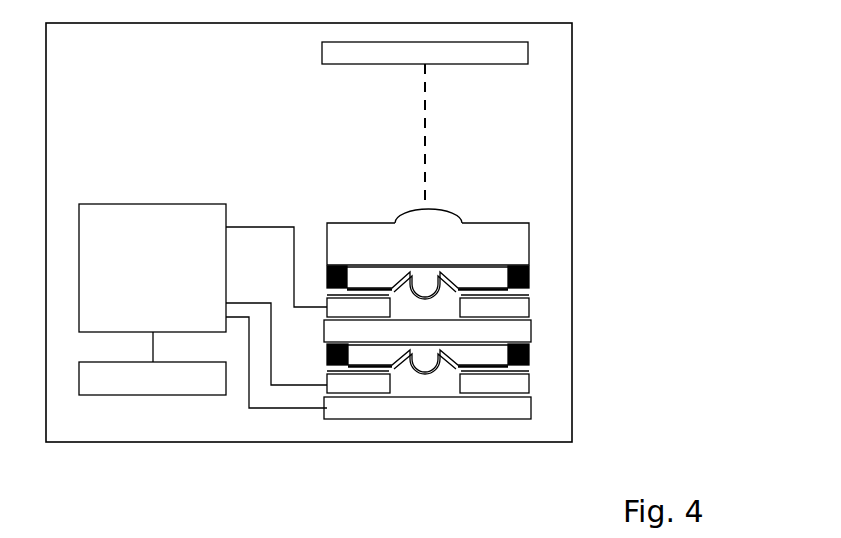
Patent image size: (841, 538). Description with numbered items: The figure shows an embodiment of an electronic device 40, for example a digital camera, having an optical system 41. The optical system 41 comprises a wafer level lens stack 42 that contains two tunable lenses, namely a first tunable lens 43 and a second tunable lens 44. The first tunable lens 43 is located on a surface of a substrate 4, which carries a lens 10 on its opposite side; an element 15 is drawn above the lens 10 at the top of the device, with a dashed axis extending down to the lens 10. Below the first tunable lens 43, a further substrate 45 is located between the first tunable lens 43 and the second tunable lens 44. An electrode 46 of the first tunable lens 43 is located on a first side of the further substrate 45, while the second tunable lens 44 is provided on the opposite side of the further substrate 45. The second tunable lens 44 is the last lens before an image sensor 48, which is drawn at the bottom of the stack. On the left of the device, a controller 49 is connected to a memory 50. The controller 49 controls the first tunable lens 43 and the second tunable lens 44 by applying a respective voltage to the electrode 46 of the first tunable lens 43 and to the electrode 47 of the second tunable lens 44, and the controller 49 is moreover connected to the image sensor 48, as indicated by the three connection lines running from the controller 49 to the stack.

The electronic device 40 is at (572, 31).
The light source or window element 15 is at (528, 53).
The lens 10 is at (448, 210).
The optical system 41 is at (556, 213).
The substrate 4 is at (529, 237).
The wafer level lens stack 42 is at (549, 250).
The first tunable lens 43 is at (549, 277).
The second tunable lens 44 is at (549, 355).
The further substrate 45 is at (531, 331).
The electrode of the first tunable lens 46 is at (327, 313).
The electrode of the second tunable lens 47 is at (327, 388).
The image sensor 48 is at (531, 408).
The controller 49 is at (152, 268).
The memory 50 is at (152, 363).